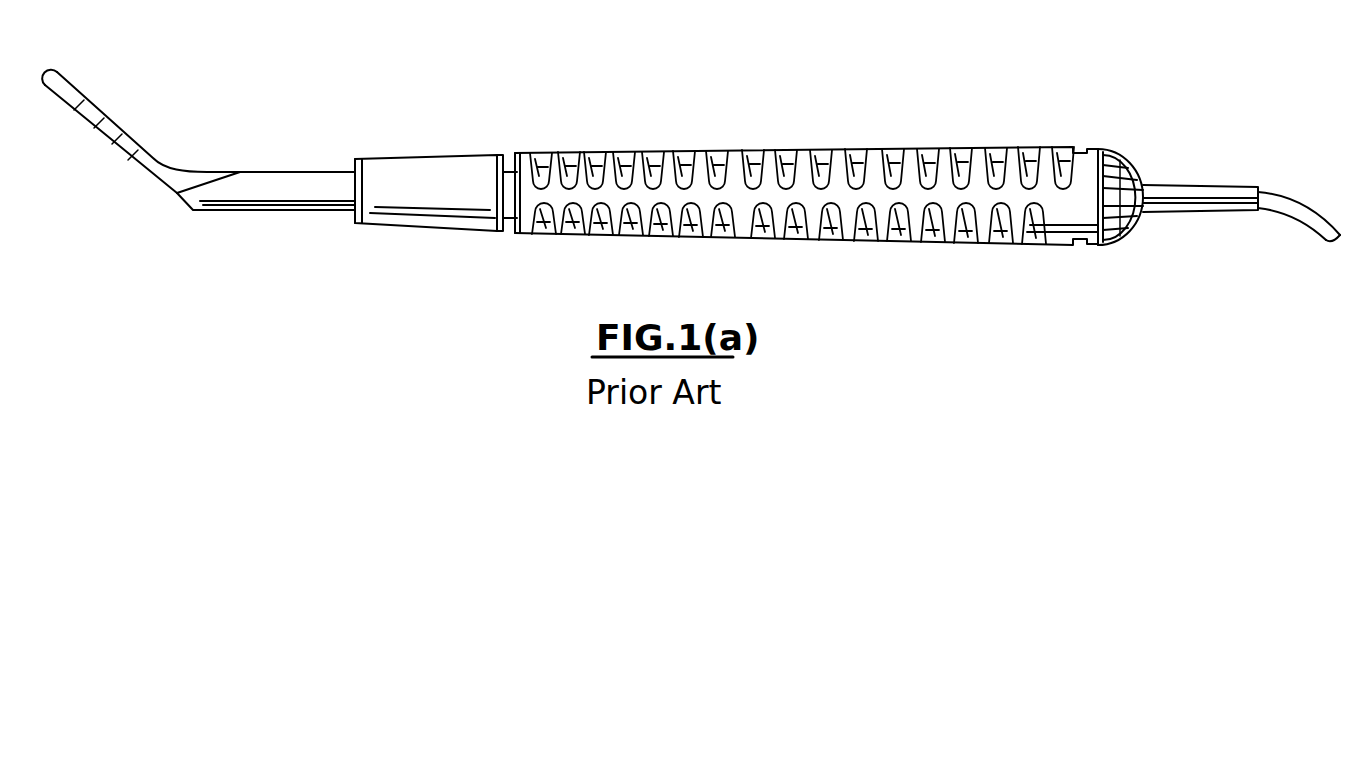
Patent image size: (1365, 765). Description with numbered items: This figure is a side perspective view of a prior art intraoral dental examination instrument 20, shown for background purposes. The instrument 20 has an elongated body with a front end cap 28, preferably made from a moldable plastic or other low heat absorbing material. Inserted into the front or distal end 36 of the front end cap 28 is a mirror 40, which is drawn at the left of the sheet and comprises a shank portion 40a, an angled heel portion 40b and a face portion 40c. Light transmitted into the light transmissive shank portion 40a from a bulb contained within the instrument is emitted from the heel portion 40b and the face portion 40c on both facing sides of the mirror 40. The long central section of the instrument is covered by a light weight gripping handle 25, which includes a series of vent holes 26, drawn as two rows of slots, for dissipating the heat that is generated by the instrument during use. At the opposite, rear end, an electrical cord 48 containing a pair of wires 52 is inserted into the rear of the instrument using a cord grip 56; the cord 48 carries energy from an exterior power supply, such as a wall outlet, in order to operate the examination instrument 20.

The intraoral dental examination instrument 20 is at (880, 128).
The gripping handle 25 is at (938, 147).
The vent holes 26 is at (712, 147).
The front end cap 28 is at (453, 170).
The front or distal end 36 is at (350, 220).
The mirror 40 is at (72, 88).
The shank portion 40a is at (287, 203).
The heel portion 40b is at (183, 203).
The face portion 40c is at (117, 140).
The electrical cord 48 is at (1293, 200).
The wires 52 is at (1133, 222).
The cord grip 56 is at (1195, 192).